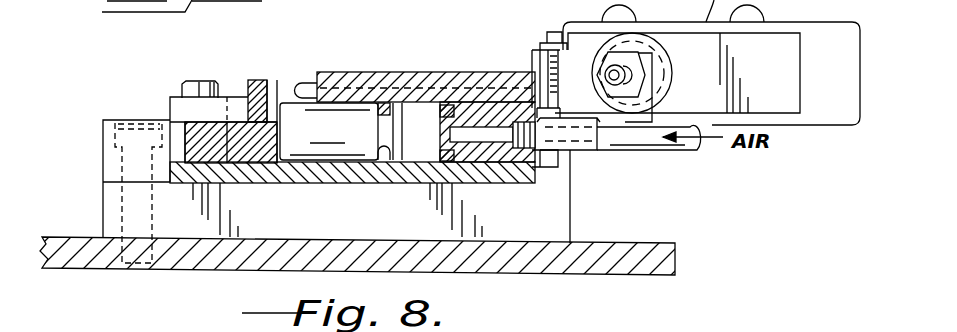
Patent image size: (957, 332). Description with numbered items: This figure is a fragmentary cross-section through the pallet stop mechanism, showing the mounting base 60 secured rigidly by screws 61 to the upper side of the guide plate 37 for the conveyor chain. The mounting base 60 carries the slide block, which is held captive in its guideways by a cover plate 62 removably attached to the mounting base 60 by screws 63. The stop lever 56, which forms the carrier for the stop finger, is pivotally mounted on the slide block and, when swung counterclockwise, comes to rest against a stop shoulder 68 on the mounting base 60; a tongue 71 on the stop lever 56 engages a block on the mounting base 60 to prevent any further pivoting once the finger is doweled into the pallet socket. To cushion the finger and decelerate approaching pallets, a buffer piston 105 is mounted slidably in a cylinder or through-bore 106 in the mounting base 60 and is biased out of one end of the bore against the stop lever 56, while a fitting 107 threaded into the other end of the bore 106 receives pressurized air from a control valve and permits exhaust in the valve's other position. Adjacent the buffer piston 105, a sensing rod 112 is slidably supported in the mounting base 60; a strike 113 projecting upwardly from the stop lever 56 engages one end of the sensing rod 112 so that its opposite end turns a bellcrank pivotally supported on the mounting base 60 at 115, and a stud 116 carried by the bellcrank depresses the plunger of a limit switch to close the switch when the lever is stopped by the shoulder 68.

The guide plate 37 is at (66, 265).
The stop lever 56 is at (256, 160).
The mounting base 60 is at (570, 192).
The screws 61 is at (110, 216).
The cover plate 62 is at (170, 100).
The screws 63 is at (184, 80).
The stop shoulder 68 is at (427, 80).
The tongue 71 is at (185, 148).
The buffer piston 105 is at (337, 104).
The through-bore 106 is at (430, 163).
The fitting 107 is at (505, 164).
The sensing rod 112 is at (305, 83).
The strike 113 is at (258, 80).
The bellcrank pivot 115 is at (540, 32).
The stud 116 is at (628, 68).